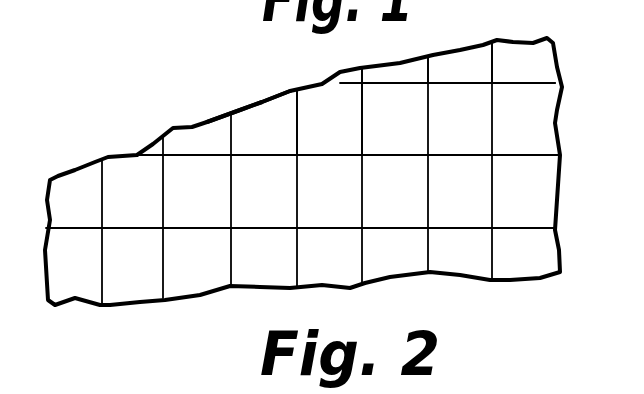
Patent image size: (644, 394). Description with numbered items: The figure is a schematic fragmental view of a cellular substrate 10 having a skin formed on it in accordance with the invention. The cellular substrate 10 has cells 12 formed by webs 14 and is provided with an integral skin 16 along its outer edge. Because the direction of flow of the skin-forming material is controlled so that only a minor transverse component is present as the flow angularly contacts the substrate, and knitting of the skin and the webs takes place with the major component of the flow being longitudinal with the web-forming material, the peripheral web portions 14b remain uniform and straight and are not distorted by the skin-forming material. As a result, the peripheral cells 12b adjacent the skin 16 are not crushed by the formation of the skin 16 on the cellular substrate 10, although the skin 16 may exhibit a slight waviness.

The cellular substrate 10 is at (560, 113).
The cells 12 is at (440, 194).
The peripheral cells 12b is at (540, 60).
The webs 14 is at (297, 262).
The peripheral web portions 14b is at (492, 57).
The integral skin 16 is at (263, 100).